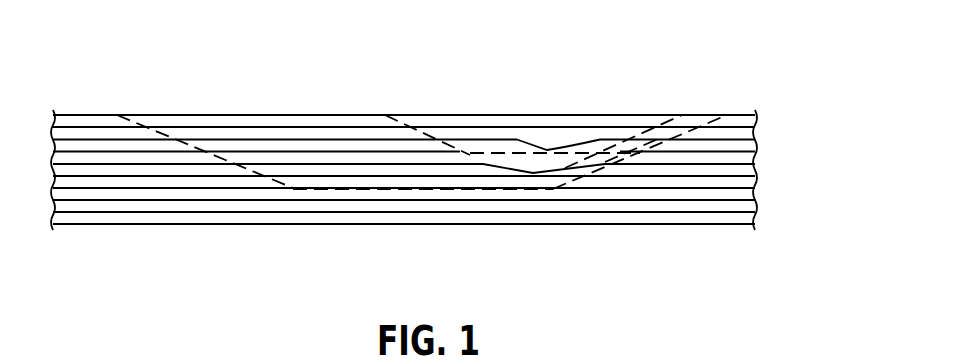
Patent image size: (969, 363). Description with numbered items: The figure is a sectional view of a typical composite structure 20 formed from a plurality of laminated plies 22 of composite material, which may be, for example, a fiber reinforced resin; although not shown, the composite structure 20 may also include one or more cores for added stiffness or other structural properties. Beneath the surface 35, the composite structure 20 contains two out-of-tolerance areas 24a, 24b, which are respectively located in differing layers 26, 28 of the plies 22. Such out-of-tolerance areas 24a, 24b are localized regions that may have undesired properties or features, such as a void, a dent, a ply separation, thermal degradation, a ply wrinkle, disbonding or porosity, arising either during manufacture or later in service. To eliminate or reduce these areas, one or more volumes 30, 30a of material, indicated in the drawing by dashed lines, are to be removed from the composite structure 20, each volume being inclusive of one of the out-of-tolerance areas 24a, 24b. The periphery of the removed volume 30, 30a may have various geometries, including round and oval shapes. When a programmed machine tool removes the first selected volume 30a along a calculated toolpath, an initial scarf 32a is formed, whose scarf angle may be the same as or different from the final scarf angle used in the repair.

The composite structure 20 is at (429, 160).
The laminated plies 22 is at (112, 157).
The out-of-tolerance area 24a is at (547, 135).
The out-of-tolerance area 24b is at (533, 167).
The layer 26 is at (430, 139).
The layer 28 is at (430, 188).
The volume of material 30 is at (228, 160).
The first selected volume of material 30a is at (420, 133).
The initial scarf 32a is at (648, 135).
The surface 35 is at (163, 113).